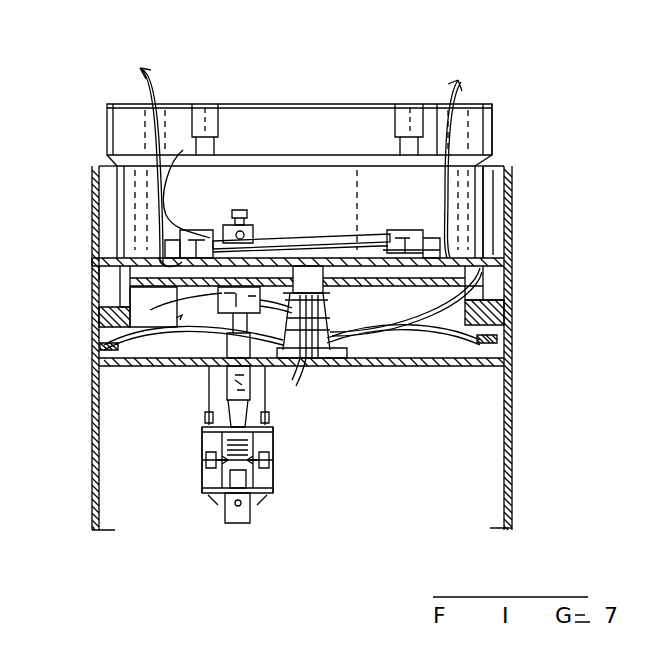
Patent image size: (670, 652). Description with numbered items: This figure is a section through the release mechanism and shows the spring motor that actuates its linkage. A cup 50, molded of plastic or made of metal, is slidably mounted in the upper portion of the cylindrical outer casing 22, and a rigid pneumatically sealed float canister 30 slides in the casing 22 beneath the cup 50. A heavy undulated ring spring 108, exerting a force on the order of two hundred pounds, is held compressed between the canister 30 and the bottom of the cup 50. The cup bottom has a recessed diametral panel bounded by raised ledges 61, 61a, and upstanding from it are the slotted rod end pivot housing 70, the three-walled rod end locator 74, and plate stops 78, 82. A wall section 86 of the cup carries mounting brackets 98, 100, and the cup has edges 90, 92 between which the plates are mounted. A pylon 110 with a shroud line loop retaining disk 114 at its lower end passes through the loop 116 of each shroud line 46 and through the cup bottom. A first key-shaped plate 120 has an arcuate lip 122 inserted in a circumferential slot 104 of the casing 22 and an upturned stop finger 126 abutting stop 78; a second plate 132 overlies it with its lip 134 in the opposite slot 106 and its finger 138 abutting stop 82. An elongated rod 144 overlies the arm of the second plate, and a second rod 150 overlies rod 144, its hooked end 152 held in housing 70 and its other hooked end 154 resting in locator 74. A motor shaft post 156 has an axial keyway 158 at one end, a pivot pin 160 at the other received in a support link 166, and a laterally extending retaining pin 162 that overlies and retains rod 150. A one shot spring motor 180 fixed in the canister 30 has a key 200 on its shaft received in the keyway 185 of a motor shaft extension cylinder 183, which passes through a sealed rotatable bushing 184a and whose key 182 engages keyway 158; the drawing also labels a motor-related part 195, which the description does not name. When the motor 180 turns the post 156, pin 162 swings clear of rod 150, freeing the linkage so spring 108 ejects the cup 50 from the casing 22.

The casing 22 is at (510, 314).
The float canister 30 is at (504, 392).
The shroud line 46 is at (141, 68).
The cup 50 is at (506, 133).
The raised ledge 61 is at (485, 266).
The raised ledge 61a is at (100, 276).
The rod end pivot housing 70 is at (404, 232).
The rod end locator 74 is at (186, 184).
The plate stop 78 is at (437, 140).
The plate stop 82 is at (158, 256).
The wall section 86 is at (292, 105).
The edge 90 is at (108, 106).
The edge 92 is at (492, 108).
The mounting bracket 98 is at (212, 122).
The mounting bracket 100 is at (405, 118).
The circumferential slot 104 is at (508, 258).
The circumferential slot 106 is at (108, 258).
The spring 108 is at (112, 360).
The pylon 110 is at (357, 240).
The shroud line loop retaining disk 114 is at (342, 372).
The loop 116 is at (318, 362).
The first plate 120 is at (462, 250).
The arcuate lip 122 is at (466, 282).
The stop finger 126 is at (462, 232).
The second plate 132 is at (140, 258).
The lip 134 is at (92, 263).
The finger 138 is at (165, 248).
The elongated rod 144 is at (340, 305).
The elongated rod 150 is at (303, 266).
The hooked end 152 is at (437, 338).
The hooked end 154 is at (190, 300).
The motor shaft post 156 is at (214, 222).
The axial keyway 158 is at (262, 345).
The pivot pin 160 is at (243, 212).
The retaining pin 162 is at (238, 232).
The support link 166 is at (253, 240).
The one shot spring motor 180 is at (288, 482).
The key 182 is at (166, 332).
The motor shaft extension cylinder 183 is at (270, 422).
The bushing 184a is at (275, 386).
The keyway 185 is at (226, 410).
The solenoid frame 195 is at (182, 405).
The key 200 is at (205, 450).